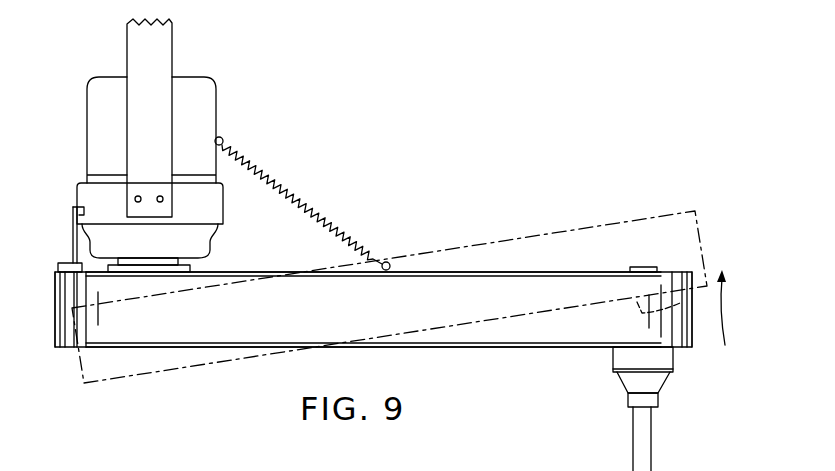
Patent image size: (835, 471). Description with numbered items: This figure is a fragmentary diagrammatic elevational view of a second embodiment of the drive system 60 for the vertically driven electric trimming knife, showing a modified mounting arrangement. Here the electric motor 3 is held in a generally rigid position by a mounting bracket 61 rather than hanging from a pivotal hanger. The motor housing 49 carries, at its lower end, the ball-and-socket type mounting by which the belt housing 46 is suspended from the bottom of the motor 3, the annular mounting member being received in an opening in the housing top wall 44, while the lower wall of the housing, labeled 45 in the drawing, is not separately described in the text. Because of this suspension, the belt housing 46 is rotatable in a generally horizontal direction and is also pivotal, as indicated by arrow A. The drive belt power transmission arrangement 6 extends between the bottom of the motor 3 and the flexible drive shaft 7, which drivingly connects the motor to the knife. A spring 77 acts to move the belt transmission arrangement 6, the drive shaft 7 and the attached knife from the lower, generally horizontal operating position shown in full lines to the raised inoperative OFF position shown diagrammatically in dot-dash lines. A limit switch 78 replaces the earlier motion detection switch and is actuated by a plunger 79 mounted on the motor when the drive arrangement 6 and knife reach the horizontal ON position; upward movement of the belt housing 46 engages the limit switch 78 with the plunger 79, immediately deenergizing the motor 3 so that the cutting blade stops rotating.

The electric motor 3 is at (110, 135).
The drive belt power transmission arrangement 6 is at (216, 324).
The flexible drive shaft 7 is at (658, 443).
The housing top wall 44 is at (523, 272).
The lower rail surface 45 is at (408, 350).
The belt housing 46 is at (593, 220).
The motor housing 49 is at (195, 240).
The second embodiment of the drive system 60 is at (437, 240).
The mounting bracket 61 is at (142, 43).
The spring 77 is at (282, 190).
The limit switch 78 is at (72, 255).
The plunger 79 is at (83, 204).
The arrow A is at (727, 316).